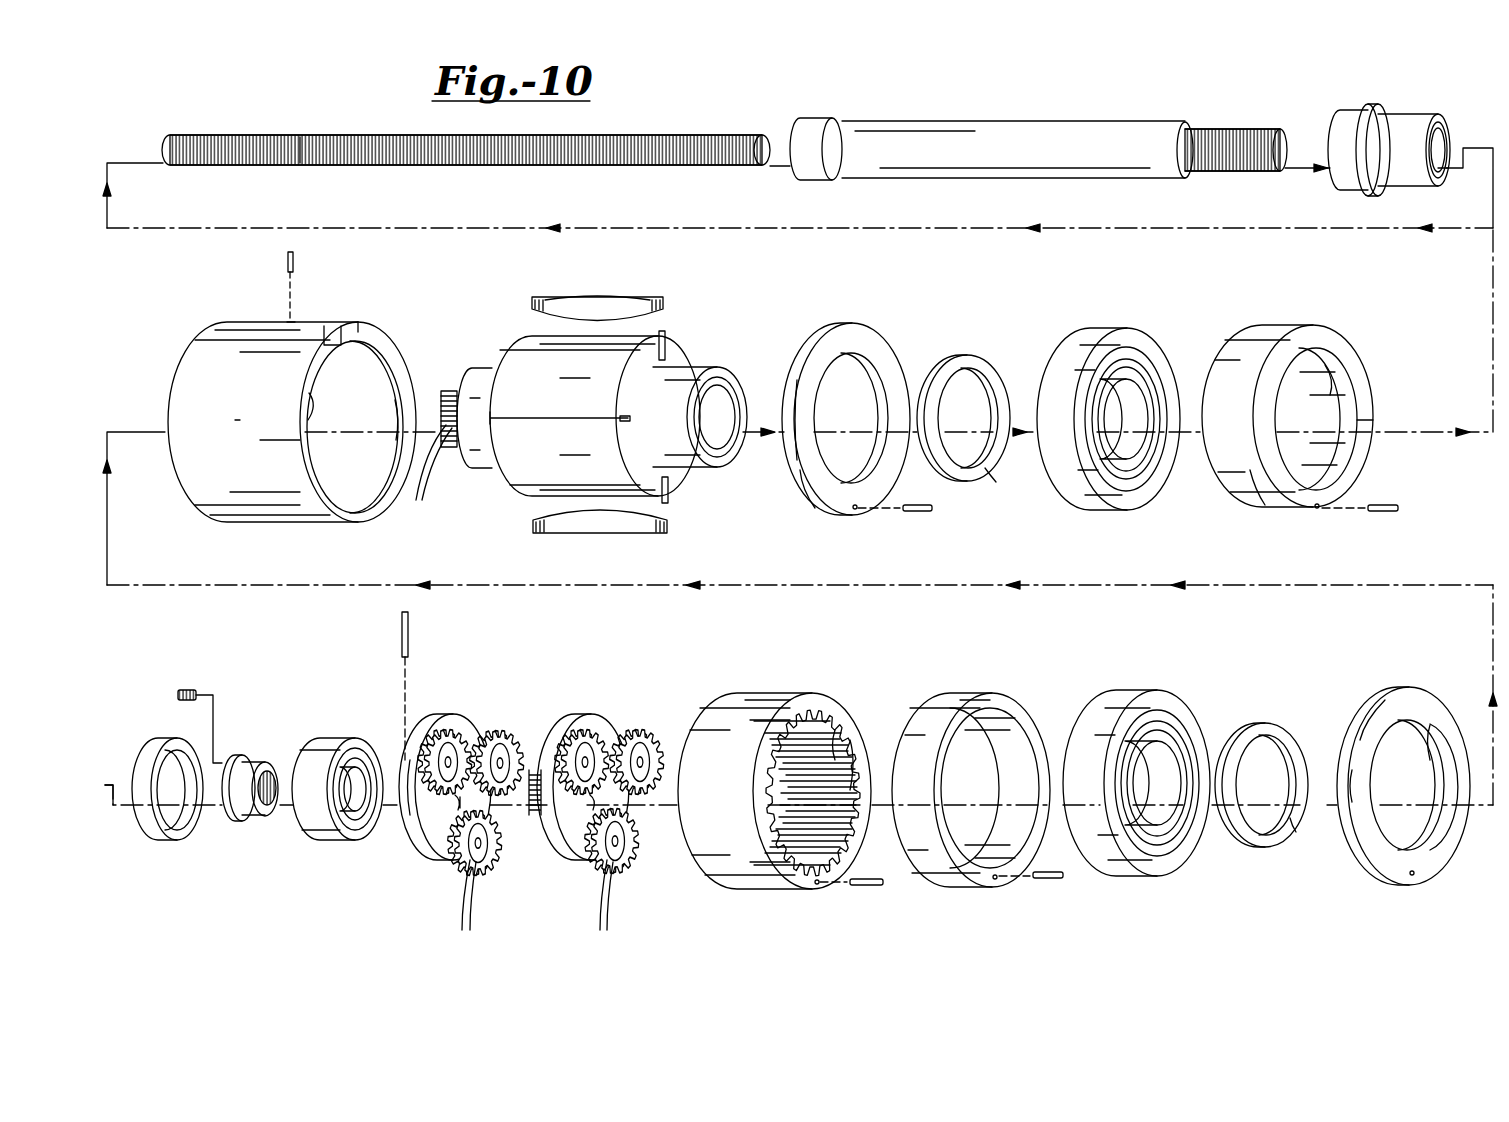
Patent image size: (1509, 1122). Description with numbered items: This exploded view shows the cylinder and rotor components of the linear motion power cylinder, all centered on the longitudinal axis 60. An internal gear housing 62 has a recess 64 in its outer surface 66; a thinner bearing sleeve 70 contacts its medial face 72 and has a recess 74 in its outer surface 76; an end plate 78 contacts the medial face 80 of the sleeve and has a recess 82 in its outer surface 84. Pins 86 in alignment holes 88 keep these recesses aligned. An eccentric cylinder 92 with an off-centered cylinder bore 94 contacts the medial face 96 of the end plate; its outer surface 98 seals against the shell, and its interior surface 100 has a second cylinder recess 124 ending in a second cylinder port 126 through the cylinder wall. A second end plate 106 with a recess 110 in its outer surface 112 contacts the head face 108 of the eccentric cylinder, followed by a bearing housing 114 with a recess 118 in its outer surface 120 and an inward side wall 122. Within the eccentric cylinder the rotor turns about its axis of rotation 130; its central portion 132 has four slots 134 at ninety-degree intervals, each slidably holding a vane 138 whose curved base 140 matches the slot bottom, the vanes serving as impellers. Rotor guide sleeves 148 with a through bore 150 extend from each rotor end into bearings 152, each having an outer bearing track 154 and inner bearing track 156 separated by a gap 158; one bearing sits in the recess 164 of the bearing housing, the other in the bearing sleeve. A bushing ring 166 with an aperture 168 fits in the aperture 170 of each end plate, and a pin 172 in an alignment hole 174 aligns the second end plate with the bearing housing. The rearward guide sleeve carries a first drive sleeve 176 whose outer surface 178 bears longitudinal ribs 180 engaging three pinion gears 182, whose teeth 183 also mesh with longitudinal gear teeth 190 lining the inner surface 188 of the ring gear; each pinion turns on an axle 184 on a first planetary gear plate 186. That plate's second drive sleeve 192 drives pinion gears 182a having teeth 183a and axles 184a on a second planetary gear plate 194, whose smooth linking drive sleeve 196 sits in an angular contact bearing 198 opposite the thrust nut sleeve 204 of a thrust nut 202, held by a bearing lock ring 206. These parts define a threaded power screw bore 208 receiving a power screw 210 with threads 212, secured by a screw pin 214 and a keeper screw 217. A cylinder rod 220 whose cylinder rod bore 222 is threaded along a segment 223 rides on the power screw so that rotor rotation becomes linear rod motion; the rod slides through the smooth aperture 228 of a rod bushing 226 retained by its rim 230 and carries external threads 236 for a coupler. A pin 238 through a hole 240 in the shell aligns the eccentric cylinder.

The longitudinal axis 60 is at (1465, 170).
The internal gear housing 62 is at (748, 880).
The recess 64 is at (748, 692).
The outer surface 66 is at (728, 788).
The bearing sleeve 70 is at (935, 860).
The medial face 72 is at (858, 735).
The recess 74 is at (965, 695).
The outer surface 76 is at (930, 788).
The end plate 78 is at (1385, 865).
The medial face 80 is at (1008, 710).
The recess 82 is at (1385, 698).
The outer surface 84 is at (1350, 730).
The pin 86 is at (862, 886).
The alignment hole 88 is at (815, 886).
The eccentric cylinder 92 is at (245, 508).
The cylinder bore 94 is at (378, 375).
The medial face 96 is at (1430, 720).
The outer surface 98 is at (235, 447).
The interior surface 100 is at (372, 478).
The second end plate 106 is at (798, 478).
The head face 108 is at (368, 328).
The recess 110 is at (815, 328).
The outer surface 112 is at (790, 376).
The bearing housing 114 is at (1240, 495).
The recess 118 is at (1266, 330).
The outer surface 120 is at (1246, 412).
The side wall 122 is at (1350, 405).
The second cylinder recess 124 is at (310, 400).
The second cylinder port 126 is at (333, 326).
The axis of rotation 130 is at (1382, 436).
The central portion 132 is at (590, 414).
The slot 134 is at (662, 331).
The vane 138 is at (600, 296).
The curved base 140 is at (532, 305).
The rotor guide sleeve 148 is at (478, 458).
The bore 150 is at (712, 398).
The bearing 152 is at (1075, 490).
The outer bearing track 154 is at (1122, 338).
The inner bearing track 156 is at (1105, 375).
The gap 158 is at (1145, 360).
The recess 164 is at (1340, 372).
The bushing ring 166 is at (985, 470).
The aperture 168 is at (996, 388).
The aperture 170 is at (880, 378).
The pin 172 is at (912, 512).
The alignment hole 174 is at (854, 510).
The first drive sleeve 176 is at (470, 465).
The outer surface 178 is at (449, 390).
The longitudinal ribs 180 is at (416, 502).
The pinion gear 182 is at (640, 740).
The pinion gear 182a is at (505, 740).
The teeth 183 is at (604, 932).
The teeth 183a is at (471, 932).
The axle 184 is at (580, 750).
The axle 184a is at (445, 750).
The first planetary gear plate 186 is at (590, 725).
The inner surface 188 is at (798, 752).
The longitudinal gear teeth 190 is at (836, 742).
The second drive sleeve 192 is at (536, 768).
The second planetary gear plate 194 is at (425, 840).
The linking drive sleeve 196 is at (405, 812).
The angular contact bearing 198 is at (318, 840).
The thrust nut 202 is at (238, 820).
The thrust nut sleeve 204 is at (260, 762).
The bearing lock ring 206 is at (160, 740).
The power screw bore 208 is at (275, 810).
The power screw 210 is at (168, 142).
The threads 212 is at (252, 140).
The screw pin 214 is at (400, 640).
The keeper screw 217 is at (190, 688).
The cylinder rod 220 is at (940, 118).
The cylinder rod bore 222 is at (1278, 148).
The segment 223 is at (806, 118).
The rod bushing 226 is at (1350, 108).
The smooth aperture 228 is at (1440, 138).
The rim 230 is at (1378, 106).
The external threads 236 is at (1228, 128).
The pin 238 is at (286, 263).
The hole 240 is at (290, 320).